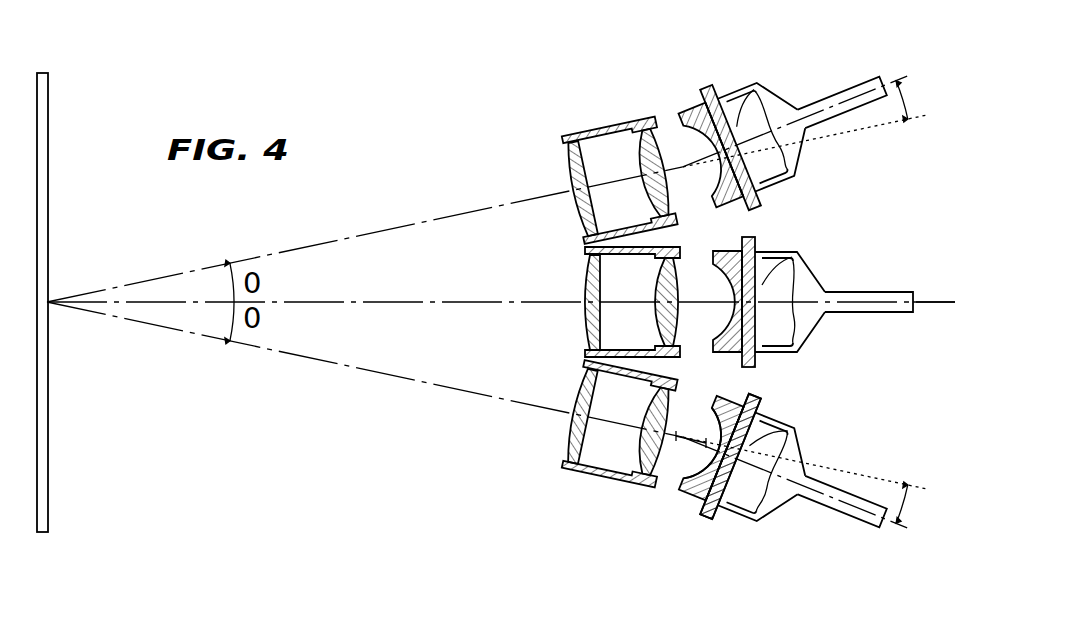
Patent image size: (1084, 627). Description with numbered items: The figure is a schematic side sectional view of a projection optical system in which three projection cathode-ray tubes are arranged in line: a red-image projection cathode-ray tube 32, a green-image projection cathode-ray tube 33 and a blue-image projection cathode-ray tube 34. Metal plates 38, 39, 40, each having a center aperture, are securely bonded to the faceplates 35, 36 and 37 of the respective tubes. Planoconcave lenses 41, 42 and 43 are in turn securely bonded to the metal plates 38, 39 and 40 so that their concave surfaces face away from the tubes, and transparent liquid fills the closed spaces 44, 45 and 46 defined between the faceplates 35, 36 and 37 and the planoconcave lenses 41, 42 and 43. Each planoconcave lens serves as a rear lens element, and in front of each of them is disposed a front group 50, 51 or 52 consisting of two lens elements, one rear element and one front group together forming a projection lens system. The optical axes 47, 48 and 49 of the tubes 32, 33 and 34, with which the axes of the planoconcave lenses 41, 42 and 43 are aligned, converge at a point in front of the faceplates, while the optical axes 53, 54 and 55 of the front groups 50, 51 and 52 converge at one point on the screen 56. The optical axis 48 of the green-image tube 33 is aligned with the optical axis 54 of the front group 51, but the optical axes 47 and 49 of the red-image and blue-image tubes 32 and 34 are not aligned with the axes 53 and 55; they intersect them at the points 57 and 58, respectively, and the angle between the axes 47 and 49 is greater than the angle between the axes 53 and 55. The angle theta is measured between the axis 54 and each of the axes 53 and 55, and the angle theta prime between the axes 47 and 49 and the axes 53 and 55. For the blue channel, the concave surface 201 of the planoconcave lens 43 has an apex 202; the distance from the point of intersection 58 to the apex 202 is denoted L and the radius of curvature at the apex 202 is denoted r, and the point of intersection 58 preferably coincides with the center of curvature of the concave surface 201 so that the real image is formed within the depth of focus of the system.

The red-image projection cathode-ray tube 32 is at (842, 103).
The green-image projection cathode-ray tube 33 is at (825, 293).
The blue-image projection cathode-ray tube 34 is at (842, 502).
The faceplate 35 is at (769, 132).
The faceplate 36 is at (797, 253).
The faceplate 37 is at (769, 472).
The metal plate 38 is at (730, 147).
The metal plate 39 is at (750, 238).
The metal plate 40 is at (730, 456).
The planoconcave lens 41 is at (711, 155).
The planoconcave lens 42 is at (716, 256).
The planoconcave lens 43 is at (711, 448).
The closed space 44 is at (724, 150).
The closed space 45 is at (733, 275).
The closed space 46 is at (725, 454).
The optical axis 47 is at (907, 76).
The optical axis 48 is at (932, 305).
The optical axis 49 is at (900, 540).
The front group 50 is at (616, 124).
The front group 51 is at (600, 265).
The front group 52 is at (588, 438).
The optical axis 53 is at (458, 213).
The optical axis 54 is at (491, 302).
The optical axis 55 is at (490, 396).
The screen 56 is at (48, 412).
The point of intersection 57 is at (684, 168).
The point of intersection 58 is at (681, 440).
The concave surface 201 is at (707, 447).
The apex 202 is at (730, 456).